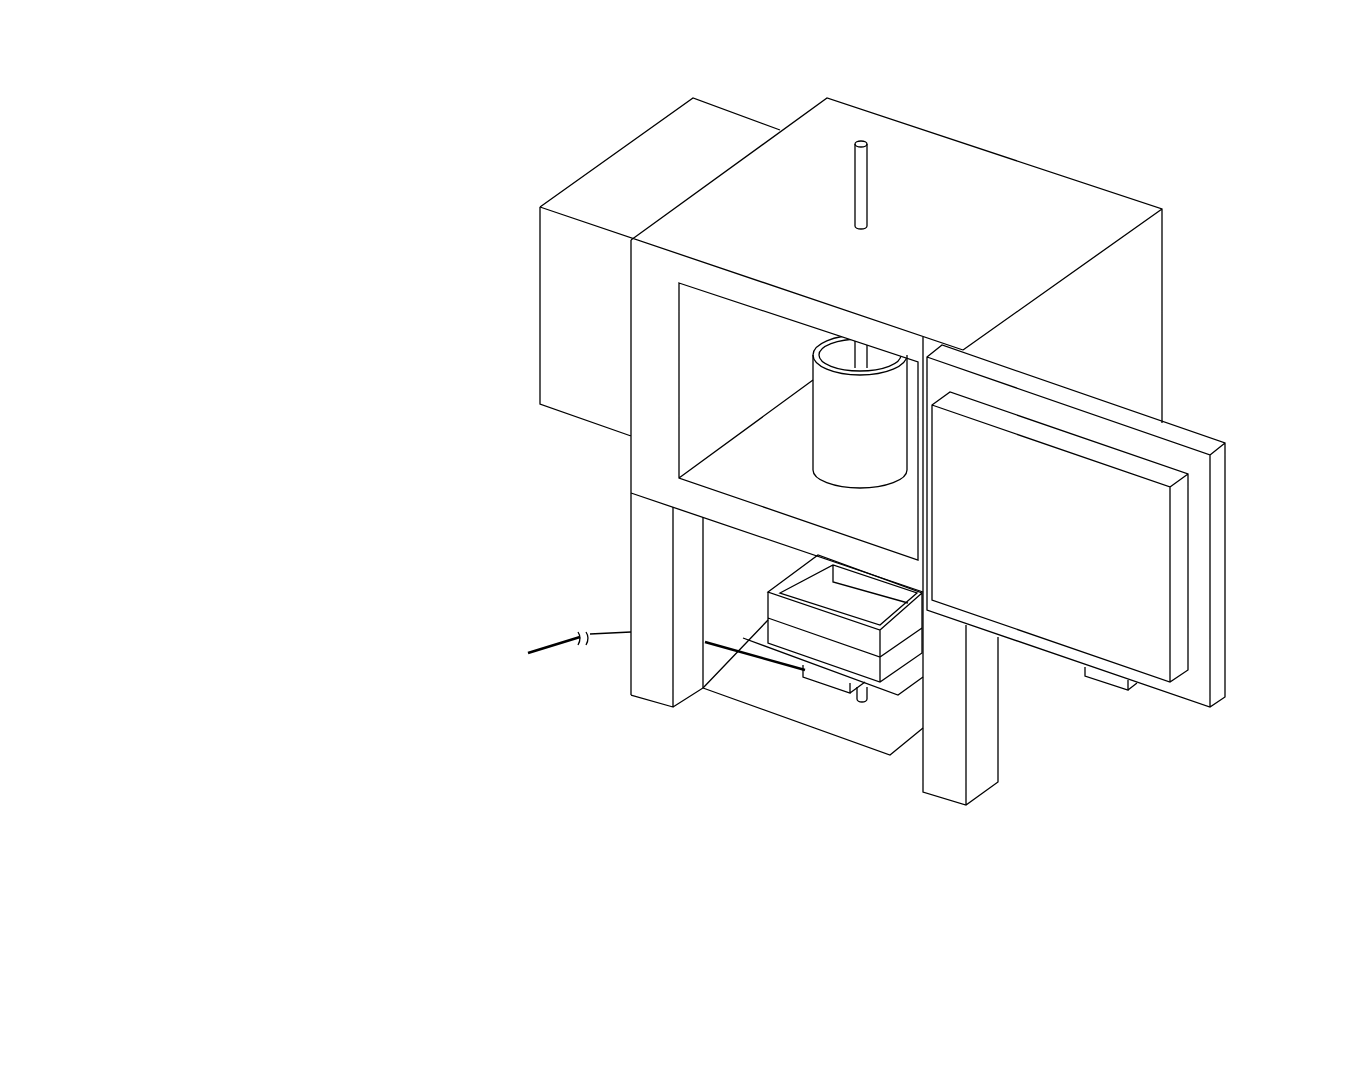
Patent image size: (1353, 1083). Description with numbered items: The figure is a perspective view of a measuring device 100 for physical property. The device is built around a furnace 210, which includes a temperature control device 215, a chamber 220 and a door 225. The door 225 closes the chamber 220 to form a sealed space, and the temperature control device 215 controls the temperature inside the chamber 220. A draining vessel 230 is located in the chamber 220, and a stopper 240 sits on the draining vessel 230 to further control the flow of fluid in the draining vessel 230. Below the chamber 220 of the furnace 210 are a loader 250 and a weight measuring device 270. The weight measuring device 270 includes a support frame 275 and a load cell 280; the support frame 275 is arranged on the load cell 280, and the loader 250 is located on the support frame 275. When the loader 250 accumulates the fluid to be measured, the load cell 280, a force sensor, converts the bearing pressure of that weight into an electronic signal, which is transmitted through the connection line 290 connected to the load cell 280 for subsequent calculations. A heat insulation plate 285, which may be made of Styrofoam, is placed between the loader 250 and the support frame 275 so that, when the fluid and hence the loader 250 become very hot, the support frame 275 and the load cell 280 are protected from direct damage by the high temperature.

The measuring device 100 is at (425, 74).
The furnace 210 is at (270, 572).
The temperature control device 215 is at (739, 124).
The chamber 220 is at (679, 410).
The door 225 is at (1183, 433).
The draining vessel 230 is at (837, 458).
The stopper 240 is at (861, 141).
The loader 250 is at (790, 612).
The weight measuring device 270 is at (270, 680).
The support frame 275 is at (913, 669).
The load cell 280 is at (822, 677).
The heat insulation plate 285 is at (805, 642).
The connection line 290 is at (561, 641).